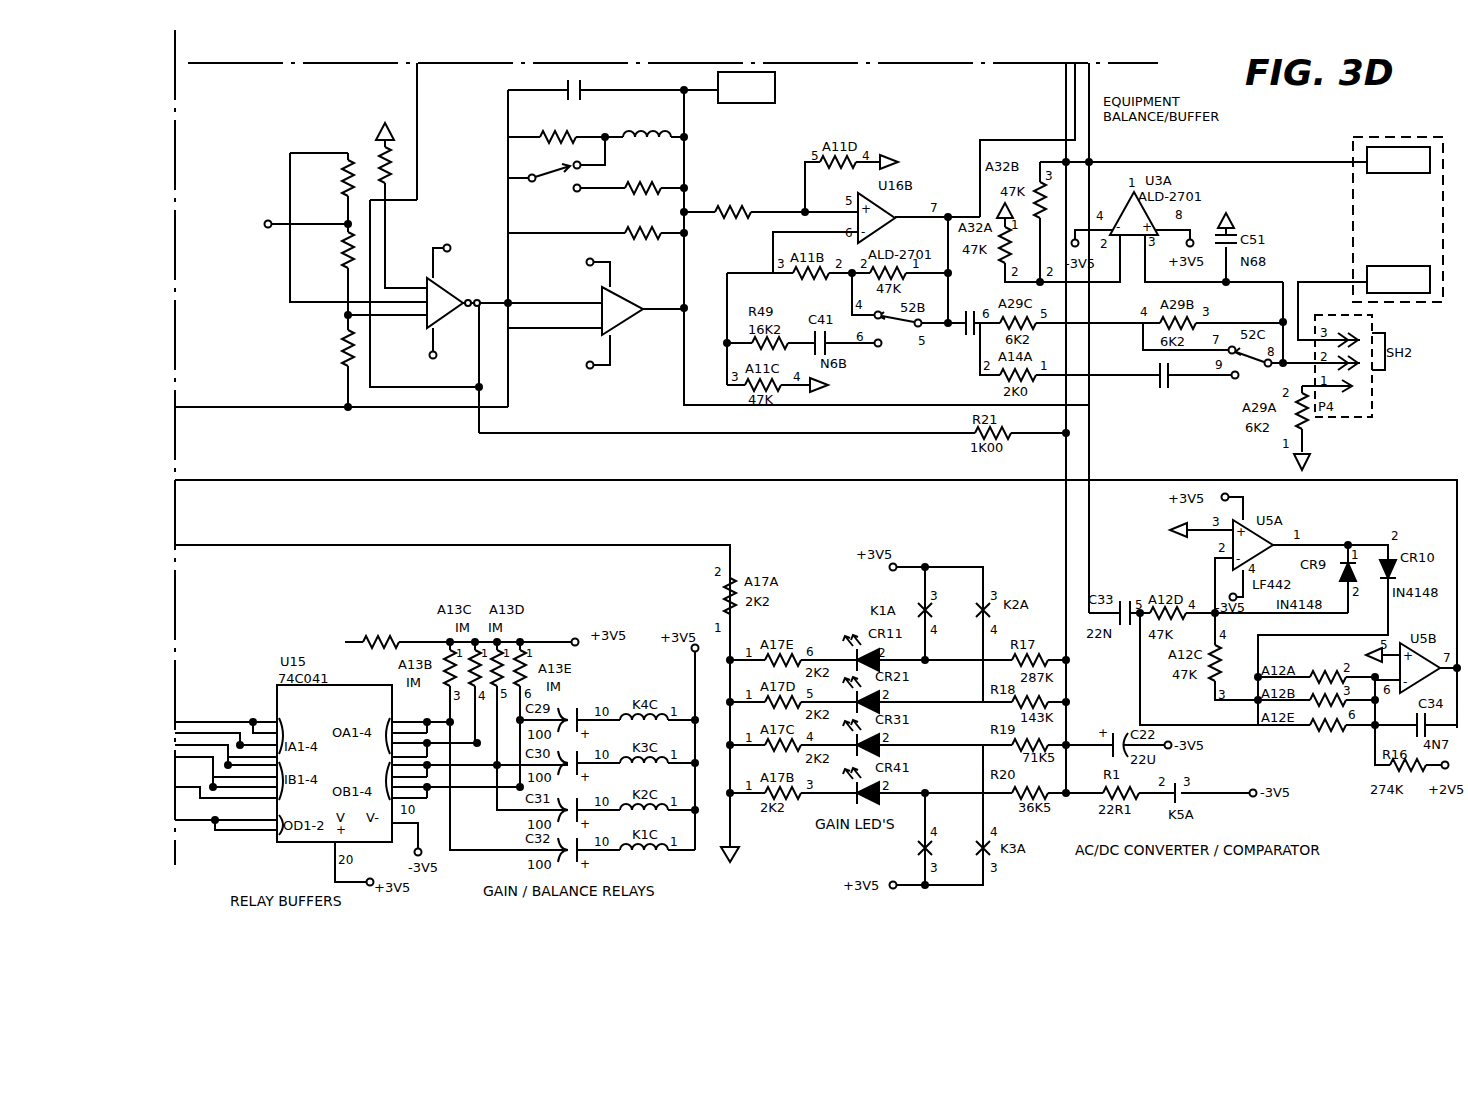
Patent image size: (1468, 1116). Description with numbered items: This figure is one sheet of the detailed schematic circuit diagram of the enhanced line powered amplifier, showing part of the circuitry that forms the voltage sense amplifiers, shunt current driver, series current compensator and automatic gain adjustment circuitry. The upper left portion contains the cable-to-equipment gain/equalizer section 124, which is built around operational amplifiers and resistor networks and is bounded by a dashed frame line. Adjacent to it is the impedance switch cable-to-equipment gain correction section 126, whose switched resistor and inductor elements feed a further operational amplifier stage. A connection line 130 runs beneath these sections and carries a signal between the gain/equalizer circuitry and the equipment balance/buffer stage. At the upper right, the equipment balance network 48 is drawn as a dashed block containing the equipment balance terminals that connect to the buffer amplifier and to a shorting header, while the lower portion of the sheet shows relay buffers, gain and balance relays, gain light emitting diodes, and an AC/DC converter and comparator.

The cable-to-equipment gain/equalizer 124 is at (282, 407).
The impedance switch cable-to-equipment gain correction 126 is at (798, 236).
The interconnection line 130 is at (612, 436).
The equipment balance network 48 is at (1370, 137).